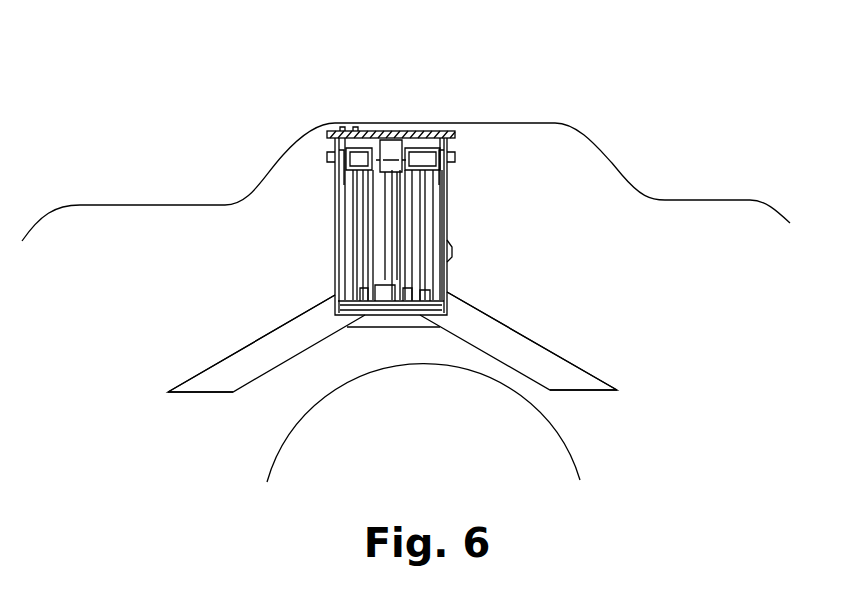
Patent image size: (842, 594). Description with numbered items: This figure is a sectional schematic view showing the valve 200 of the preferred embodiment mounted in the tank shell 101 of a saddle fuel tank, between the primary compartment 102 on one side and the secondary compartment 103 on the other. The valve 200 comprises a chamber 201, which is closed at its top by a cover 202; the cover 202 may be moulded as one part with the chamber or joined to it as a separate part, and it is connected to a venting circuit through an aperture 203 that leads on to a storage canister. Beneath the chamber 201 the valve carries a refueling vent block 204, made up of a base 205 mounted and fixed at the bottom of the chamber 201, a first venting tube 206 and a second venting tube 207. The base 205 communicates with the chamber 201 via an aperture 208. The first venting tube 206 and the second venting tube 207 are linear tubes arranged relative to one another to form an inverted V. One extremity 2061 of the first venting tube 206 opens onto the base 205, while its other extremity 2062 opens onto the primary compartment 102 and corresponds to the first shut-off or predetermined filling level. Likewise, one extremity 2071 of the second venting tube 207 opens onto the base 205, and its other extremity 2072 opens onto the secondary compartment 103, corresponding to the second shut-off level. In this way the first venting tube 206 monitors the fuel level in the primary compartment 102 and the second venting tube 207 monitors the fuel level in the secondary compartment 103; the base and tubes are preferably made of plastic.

The tank shell 101 is at (608, 160).
The valve 200 is at (475, 225).
The chamber 201 is at (385, 212).
The cover 202 is at (428, 131).
The aperture 203 is at (462, 174).
The refueling vent block 204 is at (468, 275).
The base 205 is at (380, 297).
The first venting tube 206 is at (548, 358).
The extremity of the first venting tube 2061 is at (457, 310).
The extremity of the first venting tube 2062 is at (587, 394).
The second venting tube 207 is at (245, 355).
The extremity of the second venting tube 2071 is at (333, 304).
The extremity of the second venting tube 2072 is at (200, 394).
The aperture 208 is at (385, 243).
The primary compartment 102 is at (744, 346).
The secondary compartment 103 is at (74, 349).